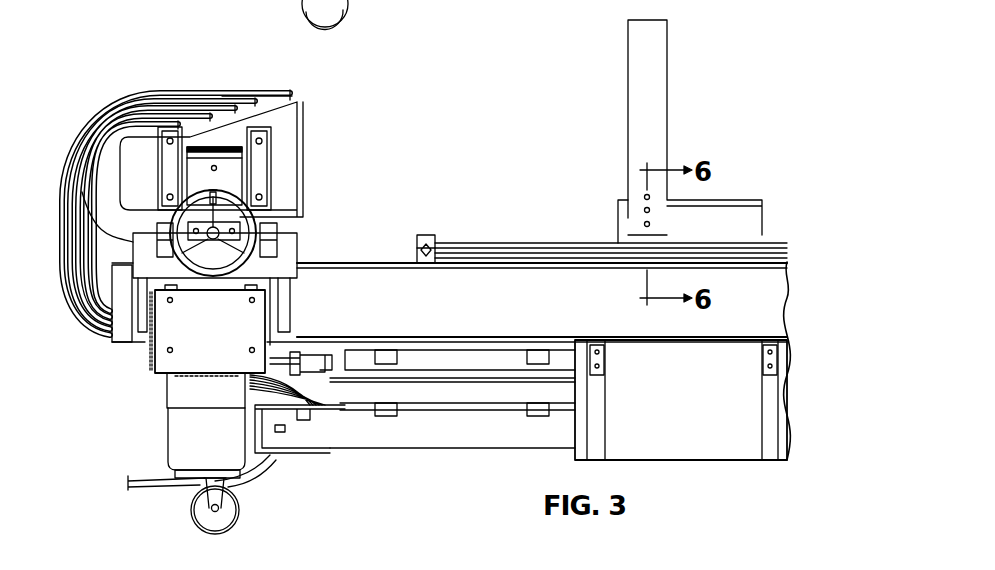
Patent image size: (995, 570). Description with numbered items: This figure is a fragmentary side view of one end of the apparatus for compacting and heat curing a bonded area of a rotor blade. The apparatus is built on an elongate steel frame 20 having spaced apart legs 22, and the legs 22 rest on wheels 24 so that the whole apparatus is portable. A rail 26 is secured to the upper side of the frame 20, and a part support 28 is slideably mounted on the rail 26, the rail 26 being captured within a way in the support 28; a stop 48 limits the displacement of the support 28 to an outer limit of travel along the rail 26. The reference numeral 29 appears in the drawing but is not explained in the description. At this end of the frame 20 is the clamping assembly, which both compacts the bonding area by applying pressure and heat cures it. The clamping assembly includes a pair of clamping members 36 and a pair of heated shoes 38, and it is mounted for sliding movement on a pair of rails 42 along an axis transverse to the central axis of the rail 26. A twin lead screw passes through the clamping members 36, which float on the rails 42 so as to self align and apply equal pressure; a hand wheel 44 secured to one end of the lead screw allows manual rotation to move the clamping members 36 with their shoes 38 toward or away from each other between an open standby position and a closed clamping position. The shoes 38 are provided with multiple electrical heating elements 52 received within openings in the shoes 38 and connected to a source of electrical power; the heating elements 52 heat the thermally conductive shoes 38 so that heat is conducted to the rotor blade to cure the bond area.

The frame 20 is at (460, 327).
The legs 22 is at (175, 390).
The wheels 24 is at (230, 507).
The rail 26 is at (597, 243).
The part support 28 is at (640, 128).
The post bracket 29 is at (637, 155).
The clamping members 36 is at (232, 173).
The heated shoes 38 is at (290, 118).
The rails 42 is at (73, 184).
The hand wheel 44 is at (215, 278).
The stop 48 is at (428, 236).
The electrical heating elements 52 is at (226, 93).